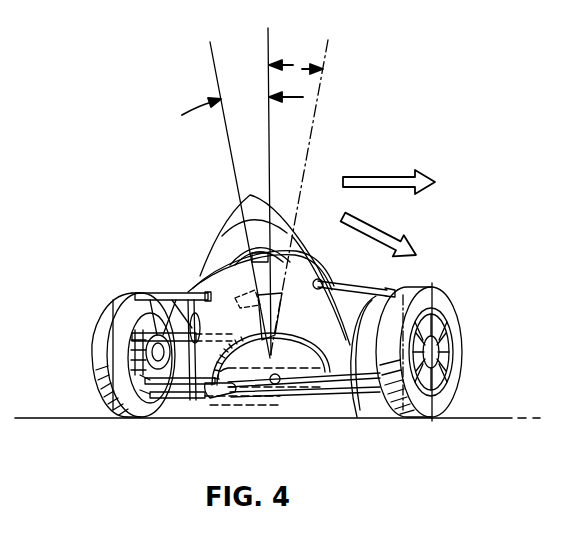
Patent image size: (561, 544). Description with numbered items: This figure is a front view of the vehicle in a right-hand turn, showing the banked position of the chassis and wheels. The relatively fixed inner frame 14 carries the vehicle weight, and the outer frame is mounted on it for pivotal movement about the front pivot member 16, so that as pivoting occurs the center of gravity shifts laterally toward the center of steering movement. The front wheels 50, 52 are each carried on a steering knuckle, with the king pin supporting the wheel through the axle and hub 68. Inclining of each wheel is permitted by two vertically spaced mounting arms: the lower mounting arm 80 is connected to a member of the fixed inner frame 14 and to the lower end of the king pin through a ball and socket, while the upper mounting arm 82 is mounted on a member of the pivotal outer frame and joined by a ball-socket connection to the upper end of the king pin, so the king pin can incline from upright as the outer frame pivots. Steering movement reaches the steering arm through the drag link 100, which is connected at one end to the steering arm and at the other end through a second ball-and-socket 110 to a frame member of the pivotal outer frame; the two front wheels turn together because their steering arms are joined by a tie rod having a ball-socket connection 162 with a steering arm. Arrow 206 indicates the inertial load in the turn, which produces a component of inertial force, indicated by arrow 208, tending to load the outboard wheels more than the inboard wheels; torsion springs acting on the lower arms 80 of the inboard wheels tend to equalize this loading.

The inner frame 14 is at (320, 382).
The pivot member 16 is at (285, 384).
The front wheel 50 is at (443, 322).
The front wheel 52 is at (95, 310).
The hub 68 is at (150, 352).
The lower mounting arm 80 is at (187, 402).
The upper mounting arm 82 is at (190, 293).
The drag link 100 is at (173, 292).
The ball-and-socket 110 is at (252, 298).
The ball-socket connection 162 is at (136, 413).
The arrow 206 is at (397, 175).
The arrow 208 is at (388, 229).